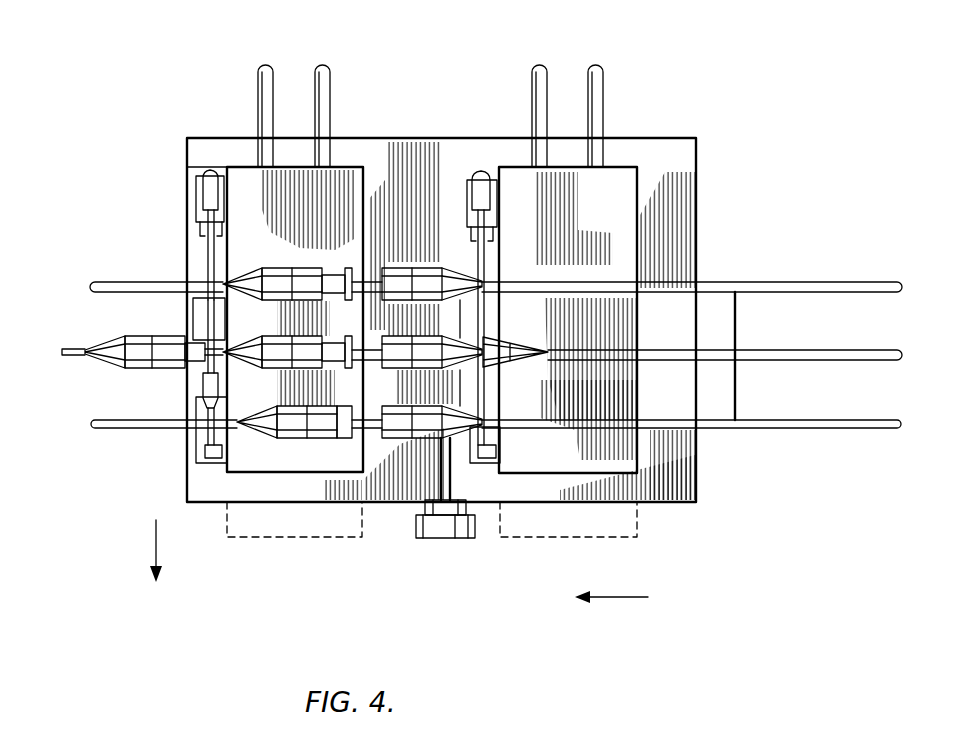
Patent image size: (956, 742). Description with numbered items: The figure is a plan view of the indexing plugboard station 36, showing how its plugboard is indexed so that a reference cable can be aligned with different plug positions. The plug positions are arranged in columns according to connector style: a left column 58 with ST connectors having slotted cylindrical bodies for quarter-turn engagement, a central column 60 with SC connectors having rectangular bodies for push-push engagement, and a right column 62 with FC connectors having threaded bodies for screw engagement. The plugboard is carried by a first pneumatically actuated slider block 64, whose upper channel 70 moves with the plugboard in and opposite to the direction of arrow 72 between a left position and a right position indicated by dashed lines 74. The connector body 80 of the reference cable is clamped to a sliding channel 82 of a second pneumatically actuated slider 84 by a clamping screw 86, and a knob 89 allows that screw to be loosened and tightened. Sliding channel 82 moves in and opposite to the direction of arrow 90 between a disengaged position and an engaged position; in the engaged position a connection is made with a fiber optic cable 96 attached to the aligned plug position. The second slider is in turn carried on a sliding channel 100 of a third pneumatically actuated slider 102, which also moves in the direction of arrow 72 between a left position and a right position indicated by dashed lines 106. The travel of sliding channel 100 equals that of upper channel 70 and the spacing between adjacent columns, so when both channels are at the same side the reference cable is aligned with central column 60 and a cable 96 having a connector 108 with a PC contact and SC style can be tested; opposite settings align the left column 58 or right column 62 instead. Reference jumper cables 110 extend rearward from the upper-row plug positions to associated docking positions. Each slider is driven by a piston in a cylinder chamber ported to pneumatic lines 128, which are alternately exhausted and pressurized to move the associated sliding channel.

The indexing plugboard station 36 is at (117, 116).
The left column 58 is at (342, 267).
The central column 60 is at (222, 316).
The right column 62 is at (335, 448).
The first pneumatically actuated slider block 64 is at (348, 168).
The upper channel 70 is at (233, 190).
The arrow 72 is at (155, 548).
The dashed lines 74 is at (312, 540).
The connector body 80 is at (480, 334).
The sliding channel 82 is at (692, 329).
The second pneumatically actuated slider 84 is at (735, 327).
The clamping screw 86 is at (432, 455).
The knob 89 is at (445, 540).
The arrow 90 is at (612, 597).
The fiber optic cable 96 is at (63, 345).
The sliding channel 100 is at (616, 204).
The third pneumatically actuated slider 102 is at (512, 170).
The dashed lines 106 is at (552, 548).
The connector 108 is at (147, 372).
The reference jumper cable 110 is at (830, 282).
The pneumatic lines 128 is at (320, 92).